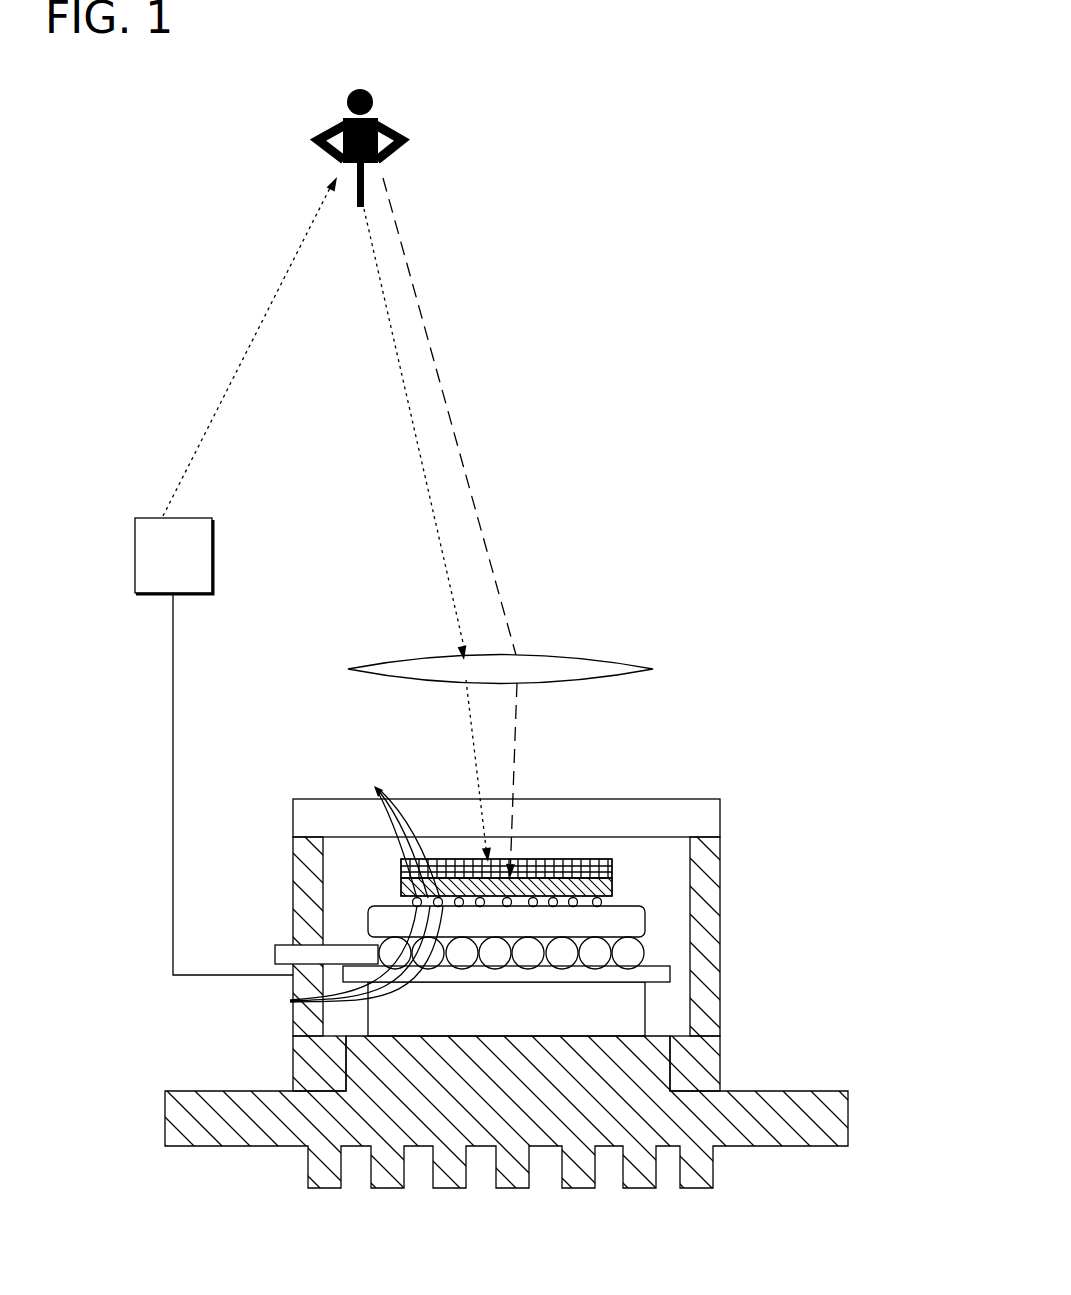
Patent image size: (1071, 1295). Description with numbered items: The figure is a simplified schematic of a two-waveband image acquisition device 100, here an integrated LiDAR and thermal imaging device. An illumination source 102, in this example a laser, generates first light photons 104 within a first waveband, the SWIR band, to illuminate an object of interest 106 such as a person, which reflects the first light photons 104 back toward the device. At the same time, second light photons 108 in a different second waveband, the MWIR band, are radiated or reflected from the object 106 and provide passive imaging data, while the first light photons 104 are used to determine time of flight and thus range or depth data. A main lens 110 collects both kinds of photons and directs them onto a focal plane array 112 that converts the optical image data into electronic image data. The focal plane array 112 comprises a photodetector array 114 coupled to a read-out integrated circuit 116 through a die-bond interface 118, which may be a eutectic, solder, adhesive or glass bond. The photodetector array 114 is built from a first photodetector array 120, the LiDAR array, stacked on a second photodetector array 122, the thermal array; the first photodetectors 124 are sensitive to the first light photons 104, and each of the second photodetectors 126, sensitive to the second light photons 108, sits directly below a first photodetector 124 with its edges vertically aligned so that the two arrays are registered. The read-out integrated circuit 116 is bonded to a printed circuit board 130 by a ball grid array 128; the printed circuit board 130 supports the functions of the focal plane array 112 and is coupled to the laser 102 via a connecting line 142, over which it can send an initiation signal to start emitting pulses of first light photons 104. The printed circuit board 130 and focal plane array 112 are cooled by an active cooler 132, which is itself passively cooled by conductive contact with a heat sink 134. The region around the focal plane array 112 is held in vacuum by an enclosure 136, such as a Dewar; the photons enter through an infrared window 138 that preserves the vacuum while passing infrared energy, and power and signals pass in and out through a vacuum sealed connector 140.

The two-waveband image acquisition device 100 is at (634, 74).
The illumination source 102 is at (152, 569).
The first light photons 104 is at (250, 351).
The object of interest 106 is at (378, 122).
The second light photons 108 is at (428, 342).
The main lens 110 is at (596, 657).
The focal plane array 112 is at (355, 852).
The photodetector array 114 is at (624, 858).
The read-out integrated circuit 116 is at (646, 926).
The die-bond interface 118 is at (600, 905).
The first photodetector array 120 is at (619, 846).
The second photodetector array 122 is at (622, 898).
The first photodetectors 124 is at (378, 792).
The second photodetectors 126 is at (290, 1000).
The ball grid array 128 is at (646, 953).
The printed circuit board 130 is at (670, 975).
The active cooler 132 is at (647, 1018).
The heat sink 134 is at (165, 1108).
The enclosure 136 is at (293, 845).
The infrared window 138 is at (597, 798).
The vacuum sealed connector 140 is at (275, 952).
The connecting line 142 is at (173, 670).